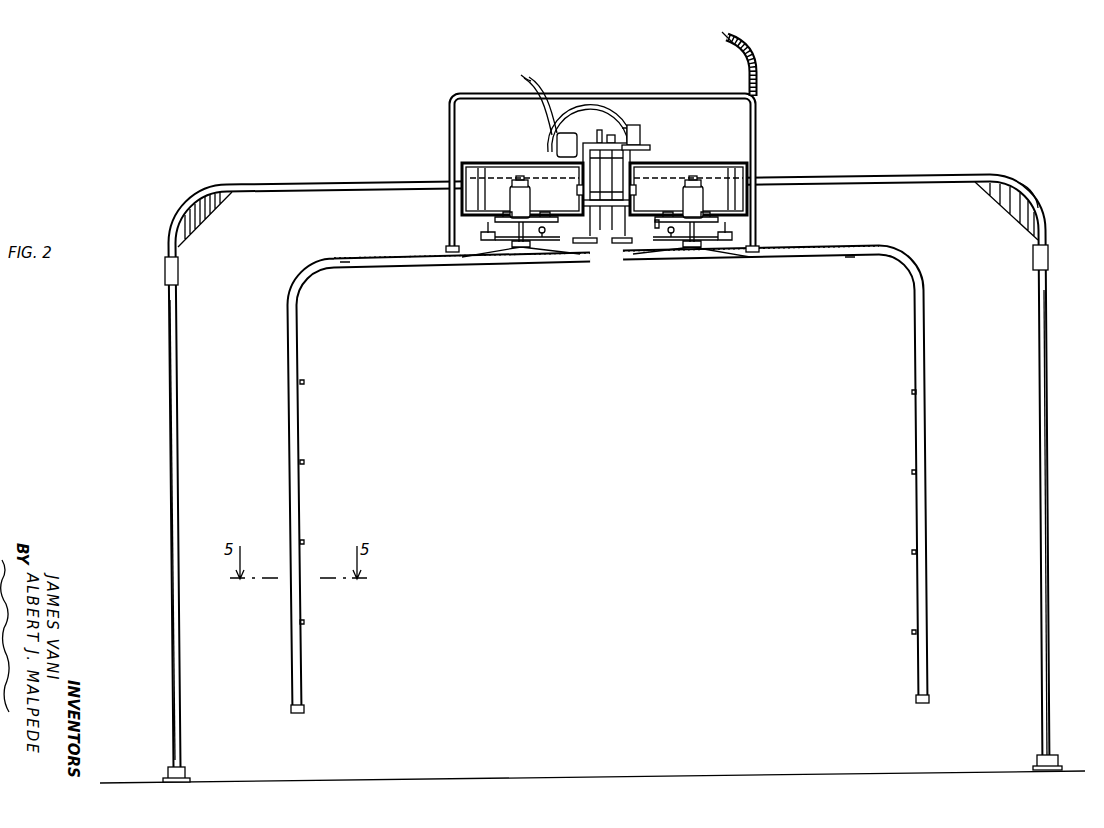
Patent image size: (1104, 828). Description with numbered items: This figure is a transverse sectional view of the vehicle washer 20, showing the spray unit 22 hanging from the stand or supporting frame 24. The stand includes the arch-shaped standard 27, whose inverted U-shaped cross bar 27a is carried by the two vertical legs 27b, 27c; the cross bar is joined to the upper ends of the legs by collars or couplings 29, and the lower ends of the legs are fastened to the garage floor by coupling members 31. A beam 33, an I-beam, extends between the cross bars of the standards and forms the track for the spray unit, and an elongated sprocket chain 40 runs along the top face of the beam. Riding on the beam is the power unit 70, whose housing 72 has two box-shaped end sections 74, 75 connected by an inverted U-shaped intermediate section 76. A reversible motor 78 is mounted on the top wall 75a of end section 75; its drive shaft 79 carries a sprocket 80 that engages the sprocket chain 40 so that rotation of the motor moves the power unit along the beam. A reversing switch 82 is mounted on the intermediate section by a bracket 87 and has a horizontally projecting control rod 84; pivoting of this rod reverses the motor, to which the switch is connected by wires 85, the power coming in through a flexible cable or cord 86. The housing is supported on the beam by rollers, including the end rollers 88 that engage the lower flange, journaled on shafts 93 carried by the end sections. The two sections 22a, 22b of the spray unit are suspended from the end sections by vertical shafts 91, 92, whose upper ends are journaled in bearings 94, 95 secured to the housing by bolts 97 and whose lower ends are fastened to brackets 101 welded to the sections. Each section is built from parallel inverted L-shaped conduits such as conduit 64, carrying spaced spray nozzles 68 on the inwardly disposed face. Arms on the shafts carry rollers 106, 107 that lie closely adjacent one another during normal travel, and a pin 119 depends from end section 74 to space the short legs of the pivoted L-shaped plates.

The vehicle washer 20 is at (1025, 183).
The spray unit 22 is at (901, 251).
The section of the spray unit 22a is at (675, 263).
The section of the spray unit 22b is at (545, 263).
The stand or supporting frame 24 is at (1047, 195).
The arch-shaped support or standard 27 is at (894, 175).
The cross bar 27a is at (940, 176).
The vertical leg 27b is at (1049, 514).
The vertical leg 27c is at (171, 479).
The collar or coupling 29 is at (180, 272).
The coupling member 31 is at (185, 773).
The beam 33 is at (611, 210).
The sprocket chain 40 is at (629, 154).
The inverted L-shaped pipe or conduit 64 is at (305, 710).
The spray nozzle 68 is at (340, 265).
The power unit 70 is at (753, 152).
The housing 72 is at (718, 160).
The end section 74 is at (690, 164).
The end section 75 is at (470, 166).
The top wall 75a is at (482, 168).
The intermediate section or bracket 76 is at (618, 142).
The reversible motor 78 is at (578, 126).
The drive shaft 79 is at (599, 129).
The gear or sprocket 80 is at (611, 134).
The control switch or reversing switch 82 is at (641, 132).
The control rod 84 is at (648, 147).
The wires 85 is at (563, 131).
The flexible cable or cord 86 is at (521, 77).
The bracket 87 is at (632, 128).
The end roller 88 is at (598, 208).
The shaft 91 is at (692, 250).
The shaft 92 is at (515, 250).
The shaft 93 is at (577, 190).
The bearing 94 is at (703, 197).
The bearing 95 is at (510, 197).
The bolt 97 is at (481, 234).
The bracket 101 is at (560, 263).
The roller 106 is at (616, 246).
The roller 107 is at (590, 245).
The pin 119 is at (655, 224).